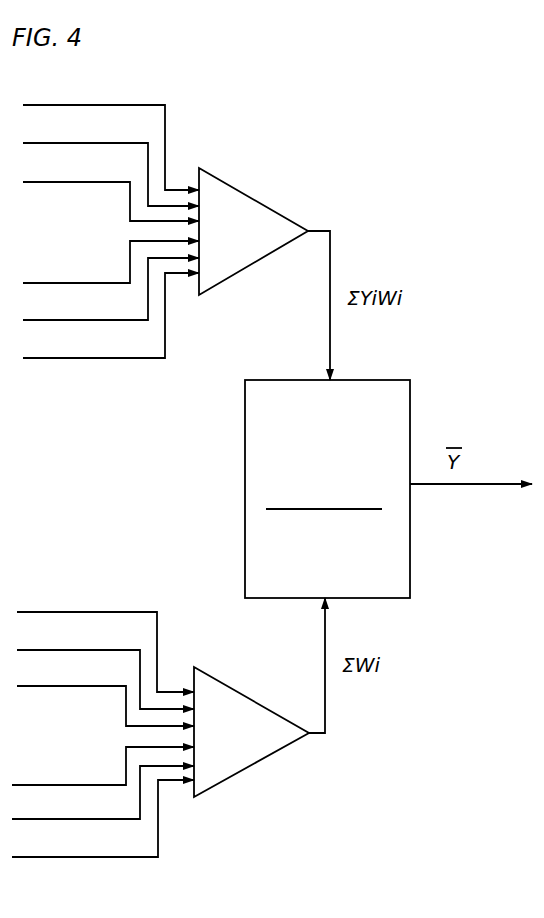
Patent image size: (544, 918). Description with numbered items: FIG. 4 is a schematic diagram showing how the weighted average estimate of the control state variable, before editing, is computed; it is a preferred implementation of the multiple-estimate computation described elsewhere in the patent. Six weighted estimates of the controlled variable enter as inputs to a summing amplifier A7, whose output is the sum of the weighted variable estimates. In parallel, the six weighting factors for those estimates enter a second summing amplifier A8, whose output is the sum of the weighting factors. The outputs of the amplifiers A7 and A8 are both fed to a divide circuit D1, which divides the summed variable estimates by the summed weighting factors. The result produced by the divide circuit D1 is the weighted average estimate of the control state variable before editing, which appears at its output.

The amplifier A7 is at (165, 219).
The amplifier A8 is at (160, 721).
The divide circuit D1 is at (400, 380).